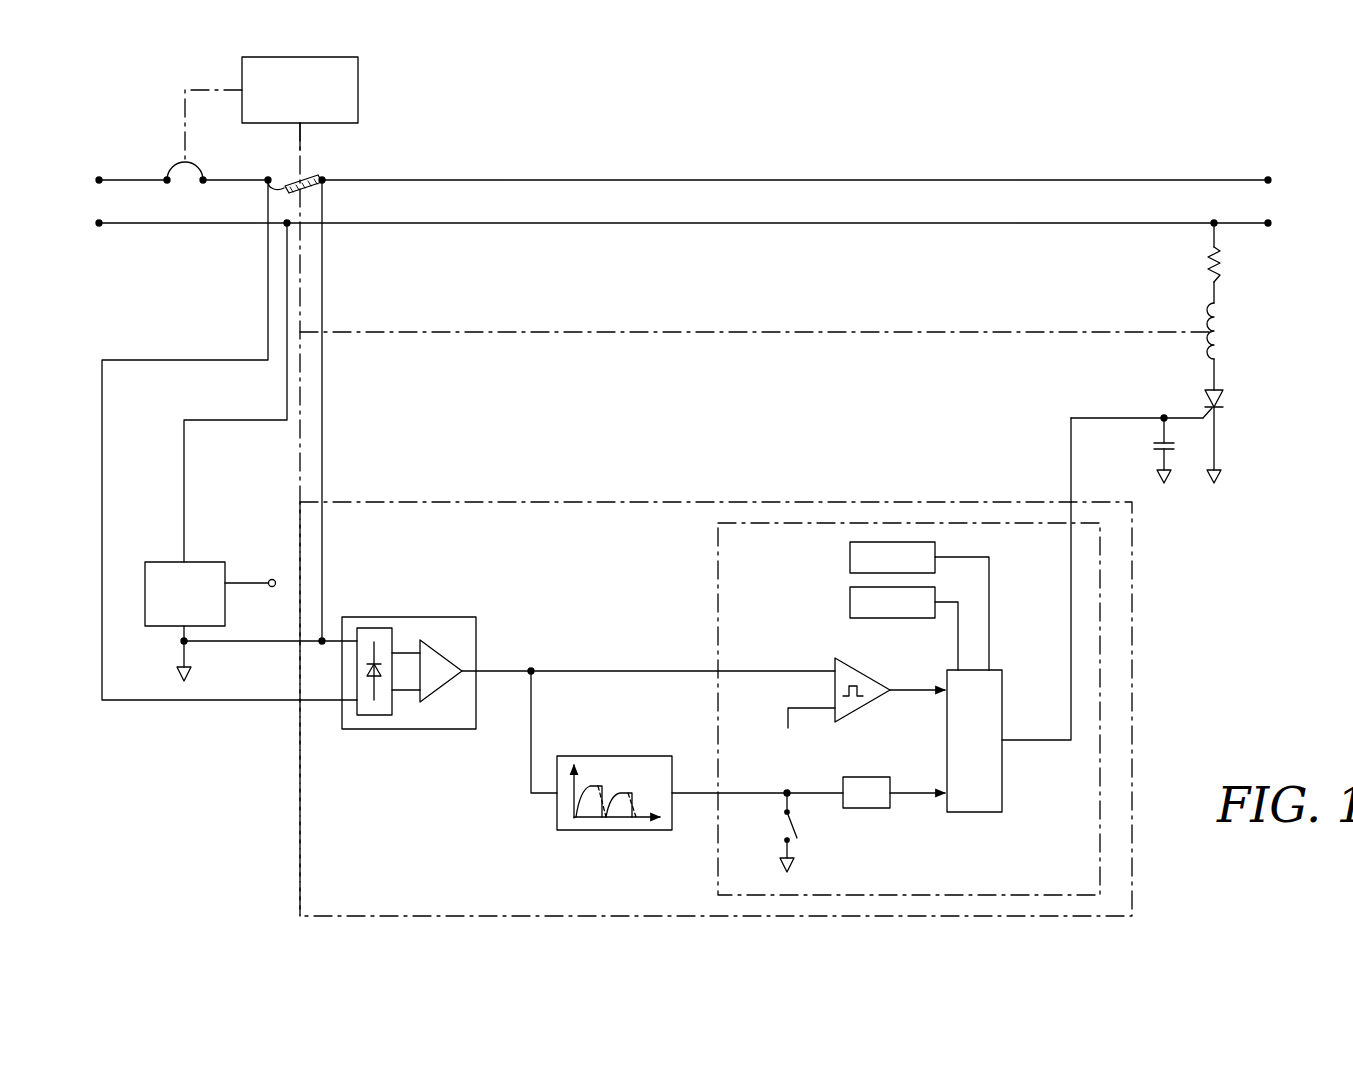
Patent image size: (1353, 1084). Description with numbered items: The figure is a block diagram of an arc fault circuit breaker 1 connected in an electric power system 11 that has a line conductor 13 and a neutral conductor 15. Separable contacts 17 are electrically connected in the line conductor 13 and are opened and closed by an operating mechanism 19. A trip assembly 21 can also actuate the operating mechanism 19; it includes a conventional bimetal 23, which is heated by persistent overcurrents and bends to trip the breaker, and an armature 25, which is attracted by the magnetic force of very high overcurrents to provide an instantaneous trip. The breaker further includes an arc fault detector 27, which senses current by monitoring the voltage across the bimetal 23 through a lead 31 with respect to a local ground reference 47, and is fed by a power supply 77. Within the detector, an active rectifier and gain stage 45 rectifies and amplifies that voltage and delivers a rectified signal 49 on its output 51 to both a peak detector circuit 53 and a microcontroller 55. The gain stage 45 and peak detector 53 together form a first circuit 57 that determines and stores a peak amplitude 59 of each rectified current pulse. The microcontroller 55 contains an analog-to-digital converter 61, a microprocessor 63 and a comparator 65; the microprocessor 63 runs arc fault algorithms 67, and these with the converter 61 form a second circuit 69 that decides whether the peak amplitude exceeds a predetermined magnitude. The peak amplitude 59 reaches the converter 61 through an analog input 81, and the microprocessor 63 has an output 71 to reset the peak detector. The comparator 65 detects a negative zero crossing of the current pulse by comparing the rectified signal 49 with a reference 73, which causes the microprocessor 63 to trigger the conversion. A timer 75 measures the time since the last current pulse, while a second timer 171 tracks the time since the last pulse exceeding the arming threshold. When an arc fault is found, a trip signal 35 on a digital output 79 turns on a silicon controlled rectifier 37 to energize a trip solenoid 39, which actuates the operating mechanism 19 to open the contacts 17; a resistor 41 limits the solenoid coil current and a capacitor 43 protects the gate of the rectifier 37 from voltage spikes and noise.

The arc fault circuit breaker 1 is at (1172, 634).
The electric power system 11 is at (547, 165).
The line conductor 13 is at (122, 183).
The neutral conductor 15 is at (122, 226).
The separable contacts 17 is at (180, 164).
The operating mechanism 19 is at (358, 83).
The trip assembly 21 is at (256, 258).
The bimetal 23 is at (310, 190).
The armature 25 is at (302, 170).
The arc fault detector 27 is at (298, 805).
The lead 31 is at (103, 405).
The trip signal 35 is at (1071, 450).
The silicon controlled rectifier 37 is at (1218, 392).
The trip solenoid 39 is at (1206, 312).
The resistor 41 is at (1212, 256).
The capacitor 43 is at (1155, 450).
The active rectifier and gain stage 45 is at (425, 617).
The local ground reference 47 is at (180, 641).
The rectified signal 49 is at (624, 670).
The output 51 is at (470, 674).
The peak detector circuit 53 is at (612, 830).
The microcontroller 55 is at (718, 538).
The first circuit 57 is at (500, 815).
The peak amplitude 59 is at (700, 790).
The analog-to-digital converter 61 is at (865, 808).
The microprocessor 63 is at (973, 812).
The comparator 65 is at (850, 668).
The arc fault algorithms 67 is at (995, 797).
The second circuit 69 is at (825, 782).
The output 71 is at (795, 826).
The reference 73 is at (808, 708).
The timer 75 is at (850, 603).
The power supply 77 is at (165, 562).
The digital output 79 is at (1003, 735).
The analog input 81 is at (718, 795).
The second timer 171 is at (850, 558).